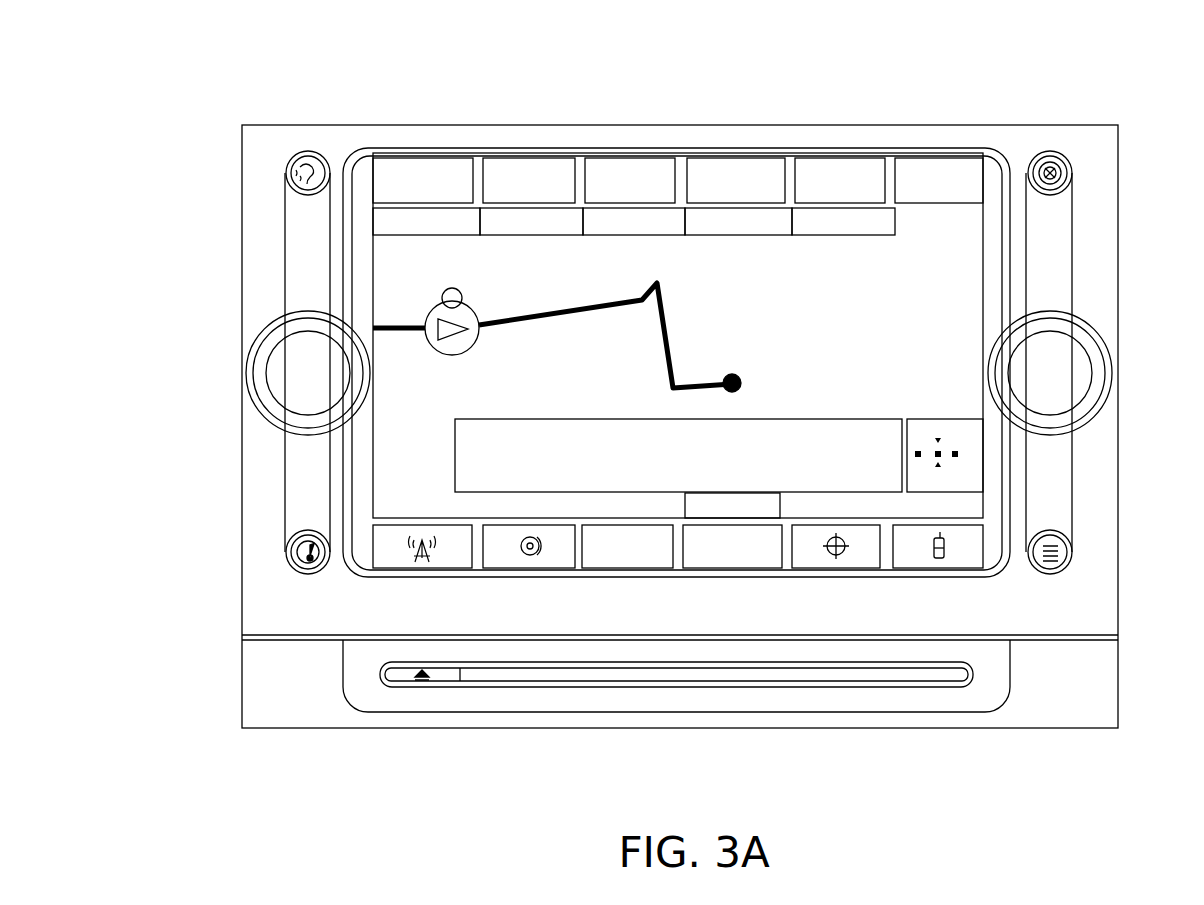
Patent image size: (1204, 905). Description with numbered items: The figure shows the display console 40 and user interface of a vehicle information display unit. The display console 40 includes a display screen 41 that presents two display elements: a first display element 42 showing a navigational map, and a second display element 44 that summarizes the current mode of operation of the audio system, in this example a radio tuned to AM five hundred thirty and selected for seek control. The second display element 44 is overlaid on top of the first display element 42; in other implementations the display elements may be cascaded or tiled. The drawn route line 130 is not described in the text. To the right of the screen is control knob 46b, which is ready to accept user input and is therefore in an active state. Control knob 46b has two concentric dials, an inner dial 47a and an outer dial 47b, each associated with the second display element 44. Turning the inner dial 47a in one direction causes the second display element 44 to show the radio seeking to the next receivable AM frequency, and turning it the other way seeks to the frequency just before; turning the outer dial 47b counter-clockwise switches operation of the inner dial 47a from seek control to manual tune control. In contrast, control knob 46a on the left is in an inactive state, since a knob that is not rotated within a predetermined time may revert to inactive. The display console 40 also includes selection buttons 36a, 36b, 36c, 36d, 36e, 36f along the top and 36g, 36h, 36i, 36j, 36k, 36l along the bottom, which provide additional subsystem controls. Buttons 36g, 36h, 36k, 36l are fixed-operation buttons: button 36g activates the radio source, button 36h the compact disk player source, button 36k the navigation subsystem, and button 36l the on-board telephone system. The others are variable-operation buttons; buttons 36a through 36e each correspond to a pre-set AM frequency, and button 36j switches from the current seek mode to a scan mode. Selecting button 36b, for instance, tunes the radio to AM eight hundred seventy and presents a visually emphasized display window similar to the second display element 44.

The display console 40 is at (212, 141).
The display screen 41 is at (390, 290).
The first display element 42 is at (940, 257).
The second display element 44 is at (792, 475).
The navigation route line 130 is at (562, 293).
The selection button 36a is at (398, 165).
The selection button 36b is at (507, 165).
The selection button 36c is at (608, 165).
The selection button 36d is at (710, 165).
The selection button 36e is at (825, 165).
The selection button 36f is at (920, 165).
The selection button 36g is at (401, 562).
The selection button 36h is at (505, 563).
The selection button 36i is at (642, 560).
The selection button 36j is at (748, 560).
The selection button 36k is at (810, 562).
The selection button 36l is at (918, 562).
The control knob 46a is at (296, 378).
The control knob 46b is at (1068, 378).
The inner dial 47a is at (1088, 332).
The outer dial 47b is at (1088, 420).